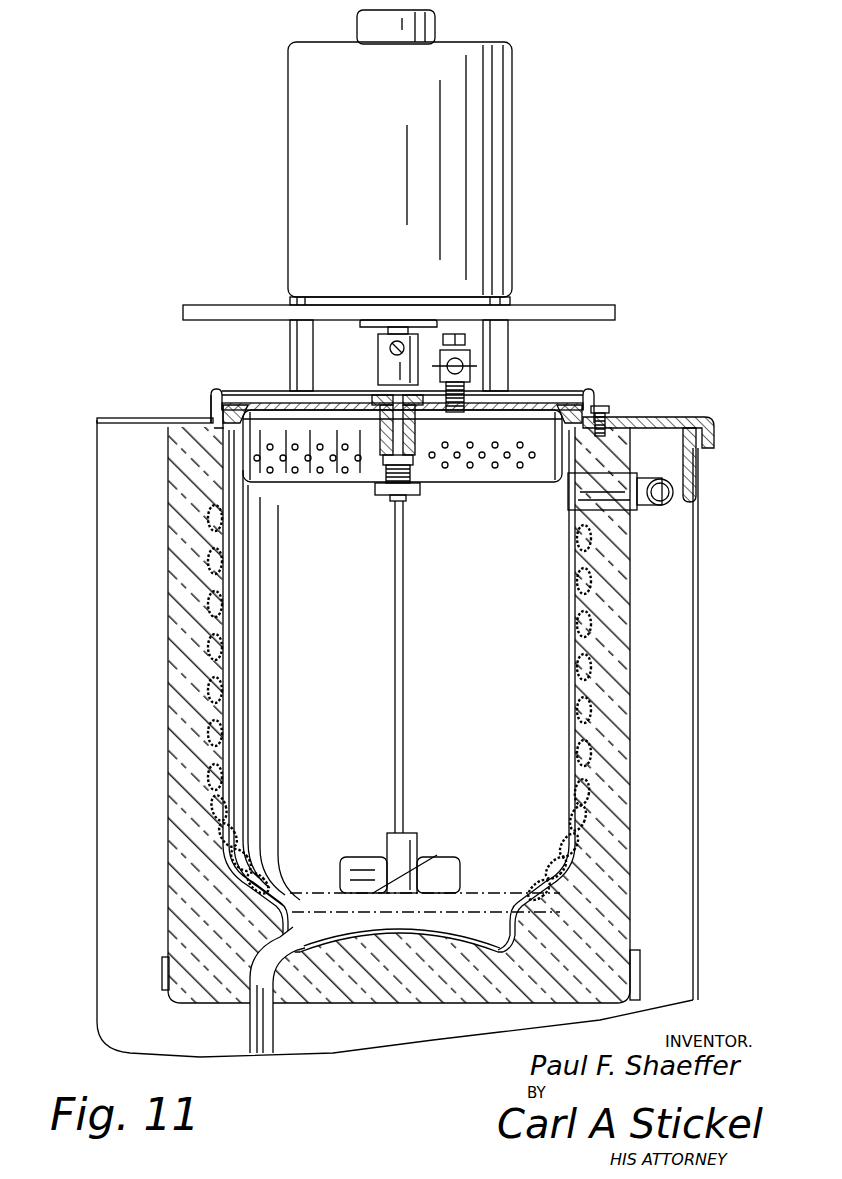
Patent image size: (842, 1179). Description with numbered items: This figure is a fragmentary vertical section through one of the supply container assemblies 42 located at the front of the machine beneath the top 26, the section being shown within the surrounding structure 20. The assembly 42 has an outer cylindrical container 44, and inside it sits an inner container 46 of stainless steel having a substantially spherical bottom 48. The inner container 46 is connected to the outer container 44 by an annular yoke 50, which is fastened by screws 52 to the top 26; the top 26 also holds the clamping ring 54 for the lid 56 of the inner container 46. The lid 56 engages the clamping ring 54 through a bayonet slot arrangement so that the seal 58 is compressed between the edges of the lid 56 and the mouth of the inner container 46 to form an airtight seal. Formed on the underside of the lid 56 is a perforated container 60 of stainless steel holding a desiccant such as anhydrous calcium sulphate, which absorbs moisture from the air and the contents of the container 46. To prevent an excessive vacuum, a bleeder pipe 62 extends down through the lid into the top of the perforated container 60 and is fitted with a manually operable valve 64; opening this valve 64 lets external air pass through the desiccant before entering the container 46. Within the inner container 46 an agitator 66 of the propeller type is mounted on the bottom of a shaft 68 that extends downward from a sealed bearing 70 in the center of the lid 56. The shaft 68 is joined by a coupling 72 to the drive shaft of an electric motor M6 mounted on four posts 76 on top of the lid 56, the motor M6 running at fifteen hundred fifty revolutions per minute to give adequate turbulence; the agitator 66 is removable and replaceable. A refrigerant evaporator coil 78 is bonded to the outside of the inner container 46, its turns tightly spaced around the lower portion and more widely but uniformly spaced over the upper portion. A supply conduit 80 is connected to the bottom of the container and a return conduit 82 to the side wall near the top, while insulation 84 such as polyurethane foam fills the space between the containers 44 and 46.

The electric motor M6 is at (325, 88).
The cabinet housing 20 is at (97, 690).
The top 26 is at (112, 418).
The supply container assembly 42 is at (635, 725).
The outer cylindrical container 44 is at (168, 917).
The inner container 46 is at (235, 665).
The spherical bottom 48 is at (448, 928).
The annular yoke 50 is at (180, 440).
The screws 52 is at (606, 408).
The clamping ring 54 is at (562, 395).
The lid 56 is at (266, 390).
The seal 58 is at (218, 404).
The perforated container 60 is at (322, 486).
The bleeder pipe 62 is at (465, 340).
The manually operable valve 64 is at (472, 364).
The agitator 66 is at (442, 847).
The shaft 68 is at (405, 640).
The sealed bearing 70 is at (416, 445).
The coupling 72 is at (380, 362).
The posts 76 is at (302, 330).
The refrigerant evaporator coil 78 is at (592, 665).
The supply conduit 80 is at (268, 1035).
The return conduit 82 is at (672, 500).
The insulation 84 is at (590, 907).